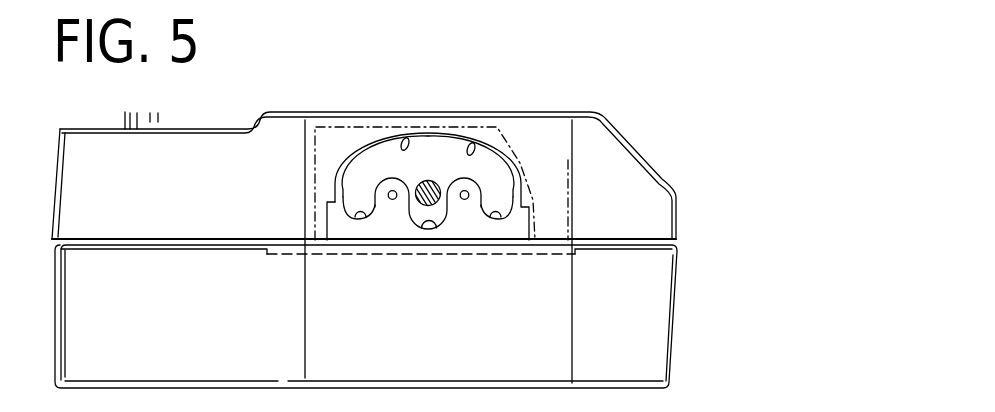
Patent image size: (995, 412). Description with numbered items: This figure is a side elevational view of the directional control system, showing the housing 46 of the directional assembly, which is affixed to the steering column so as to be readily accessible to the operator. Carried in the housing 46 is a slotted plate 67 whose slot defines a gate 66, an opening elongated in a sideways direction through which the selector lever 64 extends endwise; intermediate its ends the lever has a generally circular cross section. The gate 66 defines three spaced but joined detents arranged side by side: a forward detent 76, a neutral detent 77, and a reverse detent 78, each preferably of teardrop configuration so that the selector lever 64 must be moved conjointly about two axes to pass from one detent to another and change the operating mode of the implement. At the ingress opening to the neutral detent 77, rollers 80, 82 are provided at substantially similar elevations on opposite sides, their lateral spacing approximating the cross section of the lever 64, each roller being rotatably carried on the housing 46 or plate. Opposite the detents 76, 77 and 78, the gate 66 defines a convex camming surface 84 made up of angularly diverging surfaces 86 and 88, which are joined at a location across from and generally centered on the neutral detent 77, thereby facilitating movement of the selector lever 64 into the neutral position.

The housing 46 is at (650, 220).
The selector lever 64 is at (425, 200).
The gate 66 is at (448, 165).
The slotted plate 67 is at (340, 140).
The forward detent 76 is at (363, 213).
The neutral detent 77 is at (431, 222).
The reverse detent 78 is at (497, 213).
The roller 80 is at (380, 173).
The roller 82 is at (490, 173).
The convex camming surface 84 is at (377, 135).
The angularly diverging surface 86 is at (407, 137).
The angularly diverging surface 88 is at (475, 143).